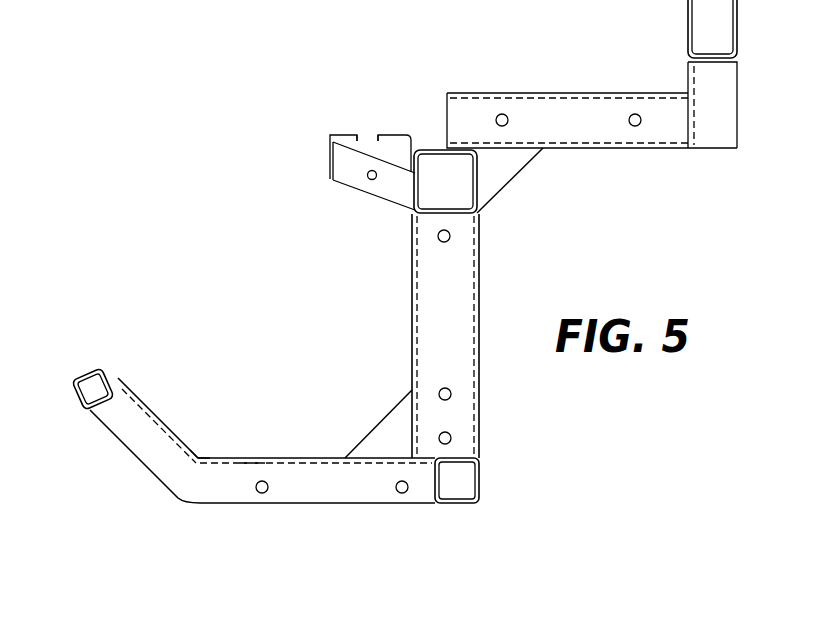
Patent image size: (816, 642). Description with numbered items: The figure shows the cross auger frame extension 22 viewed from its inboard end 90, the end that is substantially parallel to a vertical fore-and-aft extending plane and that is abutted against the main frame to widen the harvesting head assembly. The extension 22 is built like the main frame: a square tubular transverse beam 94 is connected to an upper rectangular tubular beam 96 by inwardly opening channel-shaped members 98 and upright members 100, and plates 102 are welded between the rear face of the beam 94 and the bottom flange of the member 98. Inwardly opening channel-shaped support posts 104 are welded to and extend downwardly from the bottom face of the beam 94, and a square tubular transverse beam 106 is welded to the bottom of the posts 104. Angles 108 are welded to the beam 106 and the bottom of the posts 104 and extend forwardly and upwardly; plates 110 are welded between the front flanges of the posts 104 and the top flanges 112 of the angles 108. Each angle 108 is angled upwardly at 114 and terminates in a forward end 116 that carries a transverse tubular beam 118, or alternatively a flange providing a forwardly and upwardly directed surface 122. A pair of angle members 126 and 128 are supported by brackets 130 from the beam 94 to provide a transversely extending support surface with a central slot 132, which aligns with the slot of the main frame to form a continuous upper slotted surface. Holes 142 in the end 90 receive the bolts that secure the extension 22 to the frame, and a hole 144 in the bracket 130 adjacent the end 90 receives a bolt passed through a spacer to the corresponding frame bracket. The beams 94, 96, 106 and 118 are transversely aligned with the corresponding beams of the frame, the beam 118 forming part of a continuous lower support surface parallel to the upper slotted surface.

The cross auger frame extension 22 is at (420, 64).
The inboard end 90 is at (740, 212).
The square tubular transverse beam 94 is at (433, 150).
The upper rectangular tubular beam 96 is at (690, 30).
The inwardly opening channel-shaped member 98 is at (604, 93).
The upright member 100 is at (737, 128).
The plate 102 is at (513, 177).
The inwardly opening channel-shaped support post 104 is at (411, 313).
The square tubular transverse beam 106 is at (481, 483).
The angle 108 is at (298, 468).
The plate 110 is at (400, 404).
The top flange 112 is at (248, 460).
The upward bend 114 is at (202, 456).
The forward end 116 is at (118, 378).
The transverse tubular beam 118 is at (77, 398).
The forwardly and upwardly directed surface 122 is at (97, 370).
The angle member 126 is at (339, 134).
The angle member 128 is at (388, 134).
The bracket 130 is at (345, 181).
The central slot 132 is at (362, 133).
The holes 142 is at (443, 243).
The hole 144 is at (370, 180).